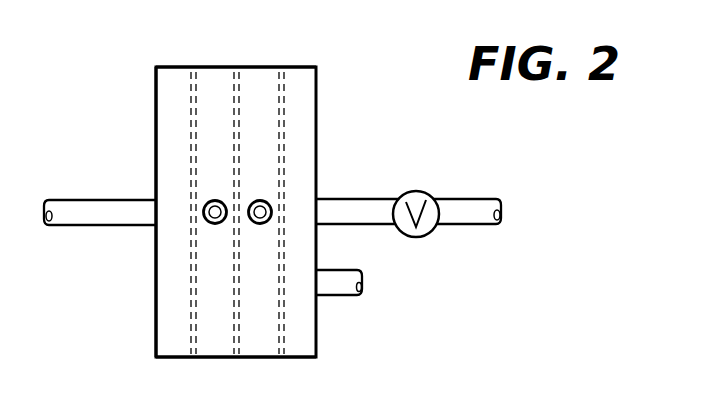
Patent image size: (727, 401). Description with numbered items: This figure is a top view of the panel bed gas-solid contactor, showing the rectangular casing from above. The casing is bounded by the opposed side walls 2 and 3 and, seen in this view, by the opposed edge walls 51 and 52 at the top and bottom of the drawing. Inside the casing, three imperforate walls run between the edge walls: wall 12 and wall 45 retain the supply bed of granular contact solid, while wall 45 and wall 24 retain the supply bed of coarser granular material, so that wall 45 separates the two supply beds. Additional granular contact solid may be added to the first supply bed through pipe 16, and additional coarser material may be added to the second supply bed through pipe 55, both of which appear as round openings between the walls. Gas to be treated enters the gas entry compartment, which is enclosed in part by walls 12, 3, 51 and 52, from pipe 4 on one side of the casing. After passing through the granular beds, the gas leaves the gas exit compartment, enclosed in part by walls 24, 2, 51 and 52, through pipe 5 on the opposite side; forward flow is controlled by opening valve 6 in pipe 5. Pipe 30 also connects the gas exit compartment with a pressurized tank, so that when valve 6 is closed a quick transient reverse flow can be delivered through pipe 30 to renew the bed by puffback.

The side wall 2 is at (316, 327).
The side wall 3 is at (156, 292).
The pipe 4 is at (114, 200).
The pipe 5 is at (370, 199).
The valve 6 is at (425, 192).
The imperforate wall 12 is at (192, 82).
The pipe 16 is at (211, 200).
The imperforate wall 24 is at (286, 110).
The pipe 30 is at (348, 270).
The imperforate wall 45 is at (242, 82).
The edge wall 51 is at (218, 67).
The edge wall 52 is at (257, 358).
The pipe 55 is at (256, 200).